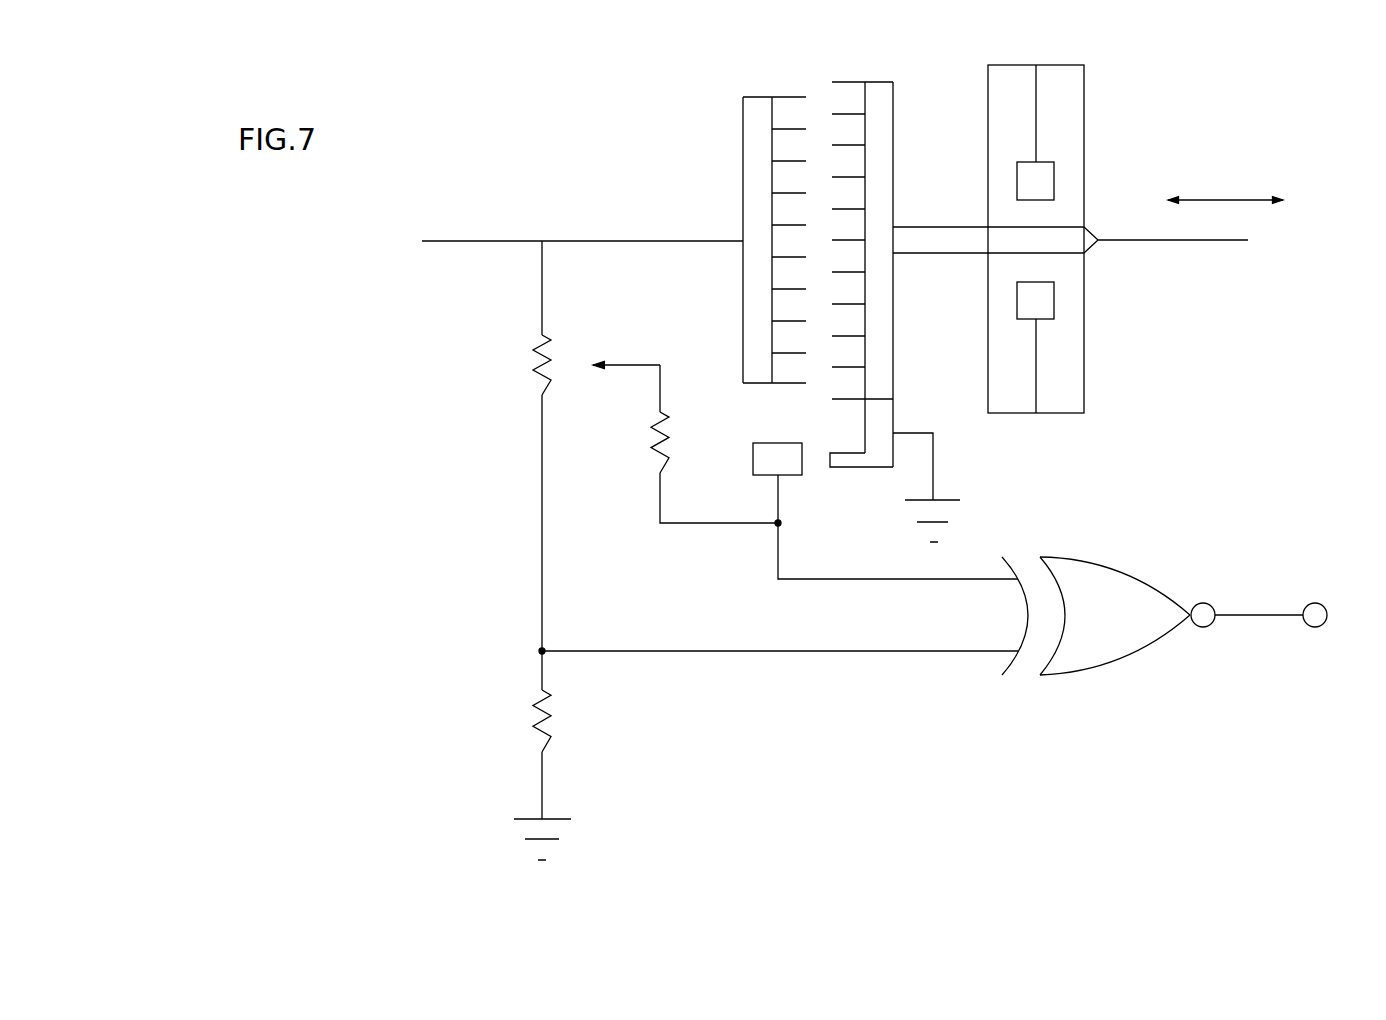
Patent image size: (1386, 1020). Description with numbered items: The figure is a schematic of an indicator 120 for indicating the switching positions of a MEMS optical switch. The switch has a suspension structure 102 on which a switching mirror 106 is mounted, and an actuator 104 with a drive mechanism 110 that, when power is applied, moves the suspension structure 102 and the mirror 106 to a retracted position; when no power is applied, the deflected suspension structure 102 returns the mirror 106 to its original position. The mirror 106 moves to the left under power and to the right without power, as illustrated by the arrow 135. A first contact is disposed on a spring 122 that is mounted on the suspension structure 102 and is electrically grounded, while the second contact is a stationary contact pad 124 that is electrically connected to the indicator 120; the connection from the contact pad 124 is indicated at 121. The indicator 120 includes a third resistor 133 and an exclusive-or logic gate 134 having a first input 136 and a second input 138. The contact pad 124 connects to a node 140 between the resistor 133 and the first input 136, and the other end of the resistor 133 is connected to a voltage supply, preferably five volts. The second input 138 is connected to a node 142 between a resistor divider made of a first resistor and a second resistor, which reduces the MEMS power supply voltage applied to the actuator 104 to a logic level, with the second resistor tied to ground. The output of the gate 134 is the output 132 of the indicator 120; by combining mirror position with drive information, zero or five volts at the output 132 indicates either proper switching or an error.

The suspension structure 102 is at (880, 130).
The actuator 104 is at (592, 185).
The switching mirror 106 is at (1239, 243).
The drive mechanism 110 is at (845, 80).
The indicator 120 is at (320, 762).
The sensor output node 121 is at (779, 502).
The spring 122 is at (860, 468).
The stationary contact pad 124 is at (778, 443).
The output 132 is at (1325, 626).
The resistor R3 133 is at (650, 450).
The exclusive-or logic gate 134 is at (1120, 660).
The arrow 135 is at (1237, 185).
The first input 136 is at (1010, 581).
The second input 138 is at (1010, 649).
The node 140 is at (775, 527).
The node 142 is at (542, 651).